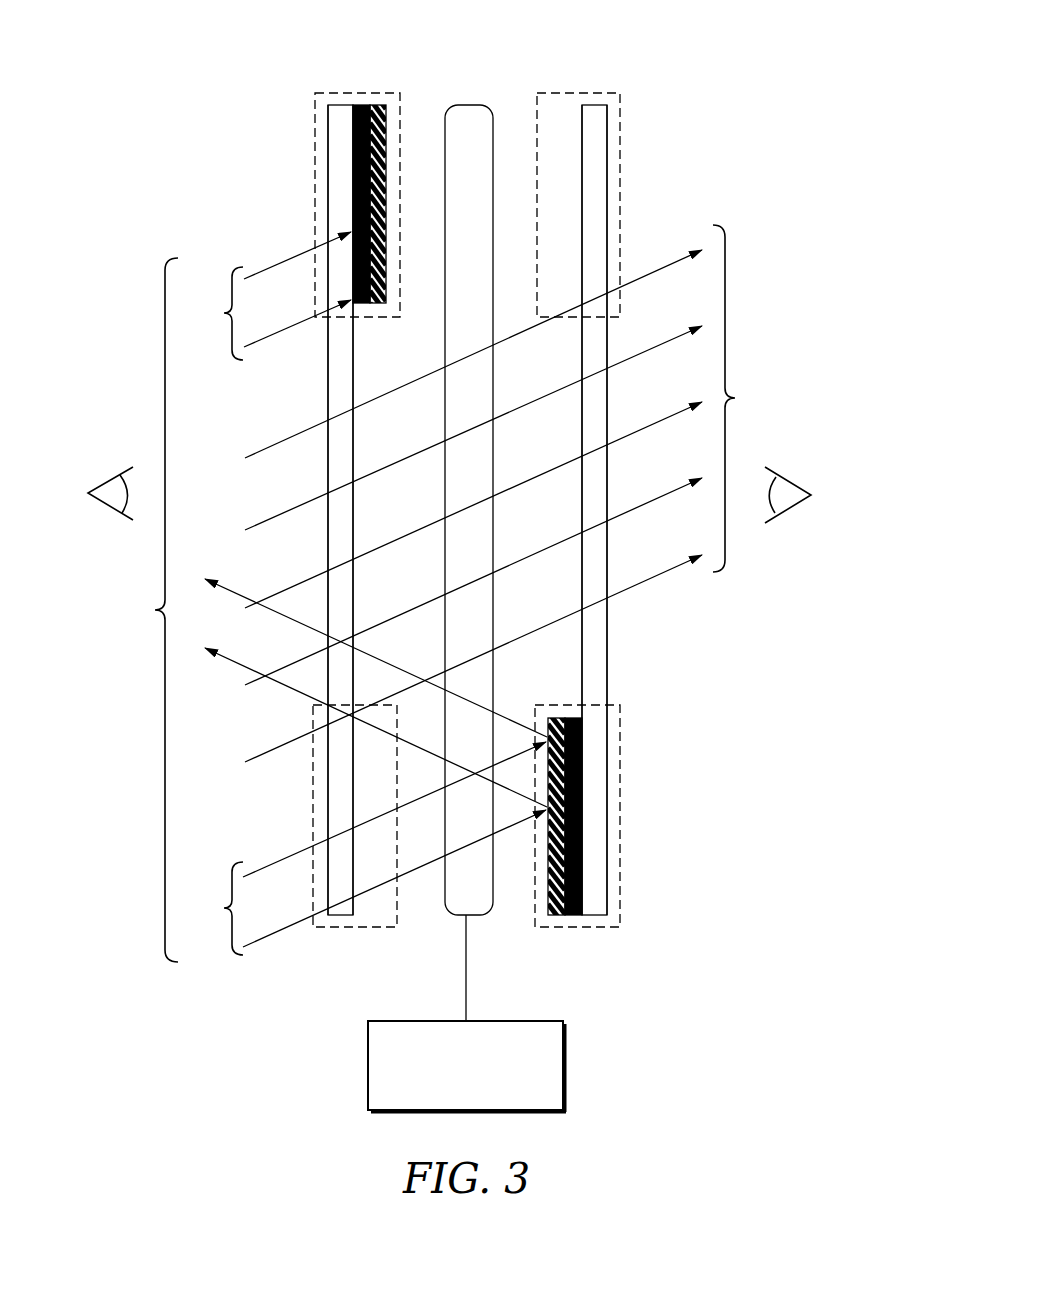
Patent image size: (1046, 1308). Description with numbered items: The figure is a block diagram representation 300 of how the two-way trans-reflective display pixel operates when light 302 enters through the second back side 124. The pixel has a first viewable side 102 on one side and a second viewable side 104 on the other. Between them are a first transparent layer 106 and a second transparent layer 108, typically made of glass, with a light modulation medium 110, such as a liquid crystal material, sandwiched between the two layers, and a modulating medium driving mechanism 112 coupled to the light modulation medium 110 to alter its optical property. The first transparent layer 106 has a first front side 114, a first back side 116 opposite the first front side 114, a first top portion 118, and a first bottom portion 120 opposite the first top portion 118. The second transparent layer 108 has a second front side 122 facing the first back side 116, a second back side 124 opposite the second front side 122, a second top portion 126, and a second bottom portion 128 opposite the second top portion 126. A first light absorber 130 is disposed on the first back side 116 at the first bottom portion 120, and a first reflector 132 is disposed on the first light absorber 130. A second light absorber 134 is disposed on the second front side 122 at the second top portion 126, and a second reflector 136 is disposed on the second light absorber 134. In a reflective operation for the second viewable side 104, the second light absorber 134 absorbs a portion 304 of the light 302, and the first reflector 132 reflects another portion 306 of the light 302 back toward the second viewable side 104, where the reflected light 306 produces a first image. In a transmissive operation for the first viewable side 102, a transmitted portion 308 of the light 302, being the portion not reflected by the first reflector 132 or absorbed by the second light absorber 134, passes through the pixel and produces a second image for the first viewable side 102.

The block diagram representation 300 is at (793, 20).
The first viewable side 102 is at (786, 478).
The second viewable side 104 is at (110, 476).
The first transparent layer 106 is at (597, 105).
The second transparent layer 108 is at (337, 917).
The light modulation medium 110 is at (469, 105).
The modulating medium driving mechanism 112 is at (368, 1068).
The first front side 114 is at (609, 628).
The first back side 116 is at (580, 677).
The first top portion 118 is at (556, 92).
The first bottom portion 120 is at (613, 928).
The second front side 122 is at (357, 348).
The second back side 124 is at (324, 385).
The second top portion 126 is at (330, 92).
The second bottom portion 128 is at (365, 928).
The first light absorber 130 is at (575, 915).
The first reflector 132 is at (552, 918).
The second light absorber 134 is at (363, 105).
The second reflector 136 is at (374, 104).
The light 302 is at (329, 610).
The absorbed portion of light 304 is at (266, 296).
The reflected portion of light 306 is at (363, 848).
The transmitted portion of light 308 is at (513, 493).